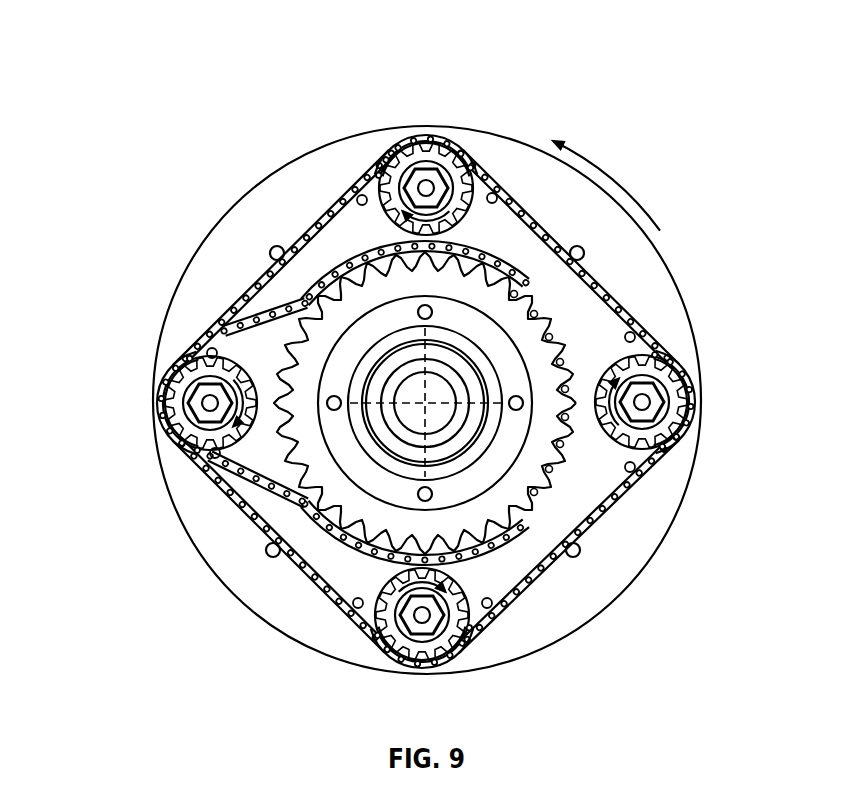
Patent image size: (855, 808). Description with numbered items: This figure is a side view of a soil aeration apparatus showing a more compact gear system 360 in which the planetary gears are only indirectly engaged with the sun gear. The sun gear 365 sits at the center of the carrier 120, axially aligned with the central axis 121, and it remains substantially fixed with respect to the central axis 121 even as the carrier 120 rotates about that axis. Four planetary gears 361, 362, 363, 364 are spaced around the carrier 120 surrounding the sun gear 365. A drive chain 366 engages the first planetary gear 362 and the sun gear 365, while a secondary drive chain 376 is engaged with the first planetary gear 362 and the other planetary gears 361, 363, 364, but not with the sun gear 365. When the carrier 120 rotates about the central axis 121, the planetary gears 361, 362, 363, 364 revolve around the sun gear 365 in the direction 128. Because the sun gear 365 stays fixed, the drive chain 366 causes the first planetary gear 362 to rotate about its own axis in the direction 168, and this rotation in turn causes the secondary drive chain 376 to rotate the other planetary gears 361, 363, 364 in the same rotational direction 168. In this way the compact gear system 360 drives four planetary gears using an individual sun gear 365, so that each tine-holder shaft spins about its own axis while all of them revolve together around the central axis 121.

The gear system 360 is at (272, 60).
The carrier 120 is at (318, 160).
The central axis 121 is at (430, 403).
The direction 128 is at (620, 178).
The direction 168 is at (392, 401).
The planetary gear 361 is at (445, 157).
The first planetary gear 362 is at (180, 402).
The planetary gear 363 is at (420, 645).
The planetary gear 364 is at (675, 403).
The sun gear 365 is at (552, 460).
The drive chain 366 is at (232, 467).
The secondary drive chain 376 is at (253, 517).